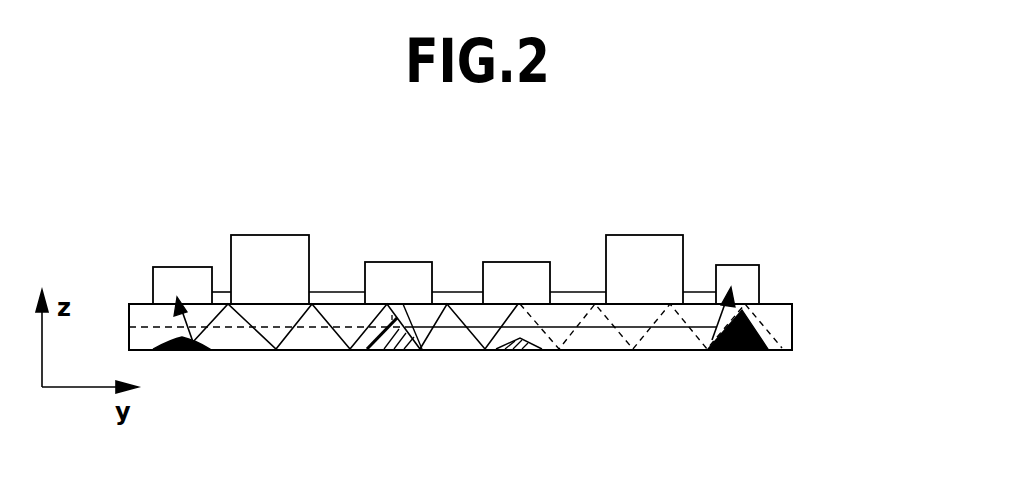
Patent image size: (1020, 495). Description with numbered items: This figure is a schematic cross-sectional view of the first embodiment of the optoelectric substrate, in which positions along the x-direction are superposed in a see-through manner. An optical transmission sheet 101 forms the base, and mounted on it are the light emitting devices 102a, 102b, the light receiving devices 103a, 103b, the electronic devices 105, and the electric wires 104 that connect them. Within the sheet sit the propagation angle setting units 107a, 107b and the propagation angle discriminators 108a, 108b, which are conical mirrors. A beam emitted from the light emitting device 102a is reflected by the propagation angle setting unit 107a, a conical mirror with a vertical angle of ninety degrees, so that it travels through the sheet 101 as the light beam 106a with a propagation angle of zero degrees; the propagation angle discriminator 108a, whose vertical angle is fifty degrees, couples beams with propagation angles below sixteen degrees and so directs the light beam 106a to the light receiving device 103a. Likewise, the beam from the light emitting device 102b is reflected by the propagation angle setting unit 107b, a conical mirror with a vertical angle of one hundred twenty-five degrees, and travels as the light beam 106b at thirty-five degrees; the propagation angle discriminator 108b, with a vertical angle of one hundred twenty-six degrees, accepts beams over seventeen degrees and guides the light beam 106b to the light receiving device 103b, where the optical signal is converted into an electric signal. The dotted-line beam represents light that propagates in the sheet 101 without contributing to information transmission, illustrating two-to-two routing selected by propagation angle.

The optical transmission sheet 101 is at (778, 314).
The light emitting device 102a is at (407, 285).
The light emitting device 102b is at (517, 285).
The light receiving device 103a is at (742, 282).
The light receiving device 103b is at (184, 285).
The electric wires 104 is at (337, 290).
The electronic devices 105 is at (272, 257).
The light beam 106a is at (598, 332).
The light beam 106b is at (293, 337).
The propagation angle setting unit 107a is at (390, 352).
The propagation angle setting unit 107b is at (517, 352).
The propagation angle discriminator 108a is at (740, 350).
The propagation angle discriminator 108b is at (181, 352).